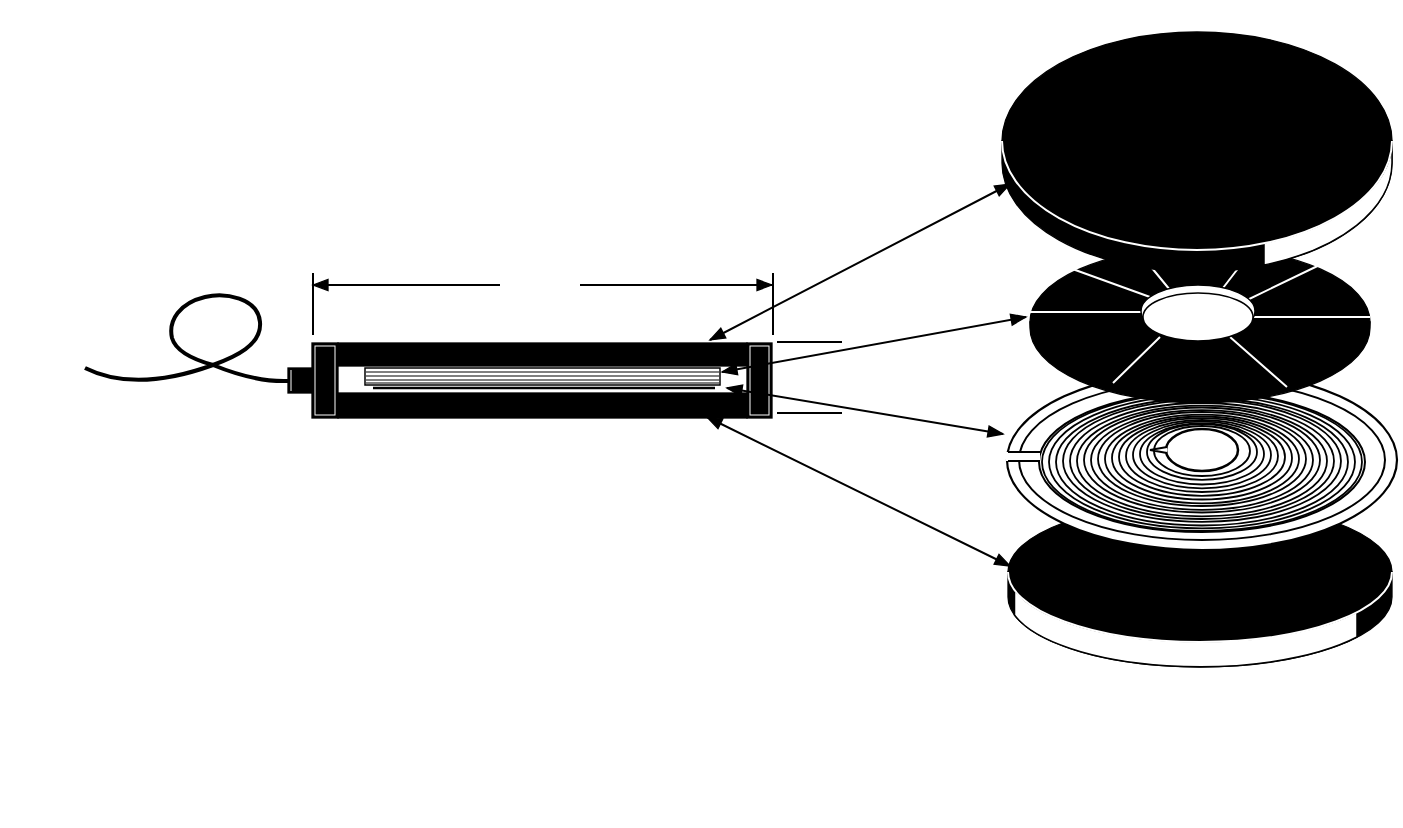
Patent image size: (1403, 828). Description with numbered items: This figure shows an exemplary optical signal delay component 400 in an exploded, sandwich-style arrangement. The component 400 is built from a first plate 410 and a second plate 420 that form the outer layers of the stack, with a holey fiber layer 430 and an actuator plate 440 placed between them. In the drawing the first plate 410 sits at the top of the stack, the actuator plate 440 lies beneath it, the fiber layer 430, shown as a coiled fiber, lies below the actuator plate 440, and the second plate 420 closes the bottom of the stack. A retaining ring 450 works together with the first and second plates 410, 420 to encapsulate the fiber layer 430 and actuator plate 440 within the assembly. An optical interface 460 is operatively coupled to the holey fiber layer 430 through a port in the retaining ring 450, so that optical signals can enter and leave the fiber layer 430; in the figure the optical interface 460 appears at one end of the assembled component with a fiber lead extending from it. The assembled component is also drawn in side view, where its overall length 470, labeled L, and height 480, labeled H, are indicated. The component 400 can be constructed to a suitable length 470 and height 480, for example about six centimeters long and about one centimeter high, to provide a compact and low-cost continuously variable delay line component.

The optical signal delay component 400 is at (381, 183).
The first plate 410 is at (1007, 127).
The second plate 420 is at (1012, 513).
The fiber layer 430 is at (1018, 400).
The actuator plate 440 is at (1040, 283).
The retaining ring 450 is at (325, 419).
The optical interface 460 is at (298, 394).
The length 470 is at (552, 260).
The height 480 is at (863, 328).